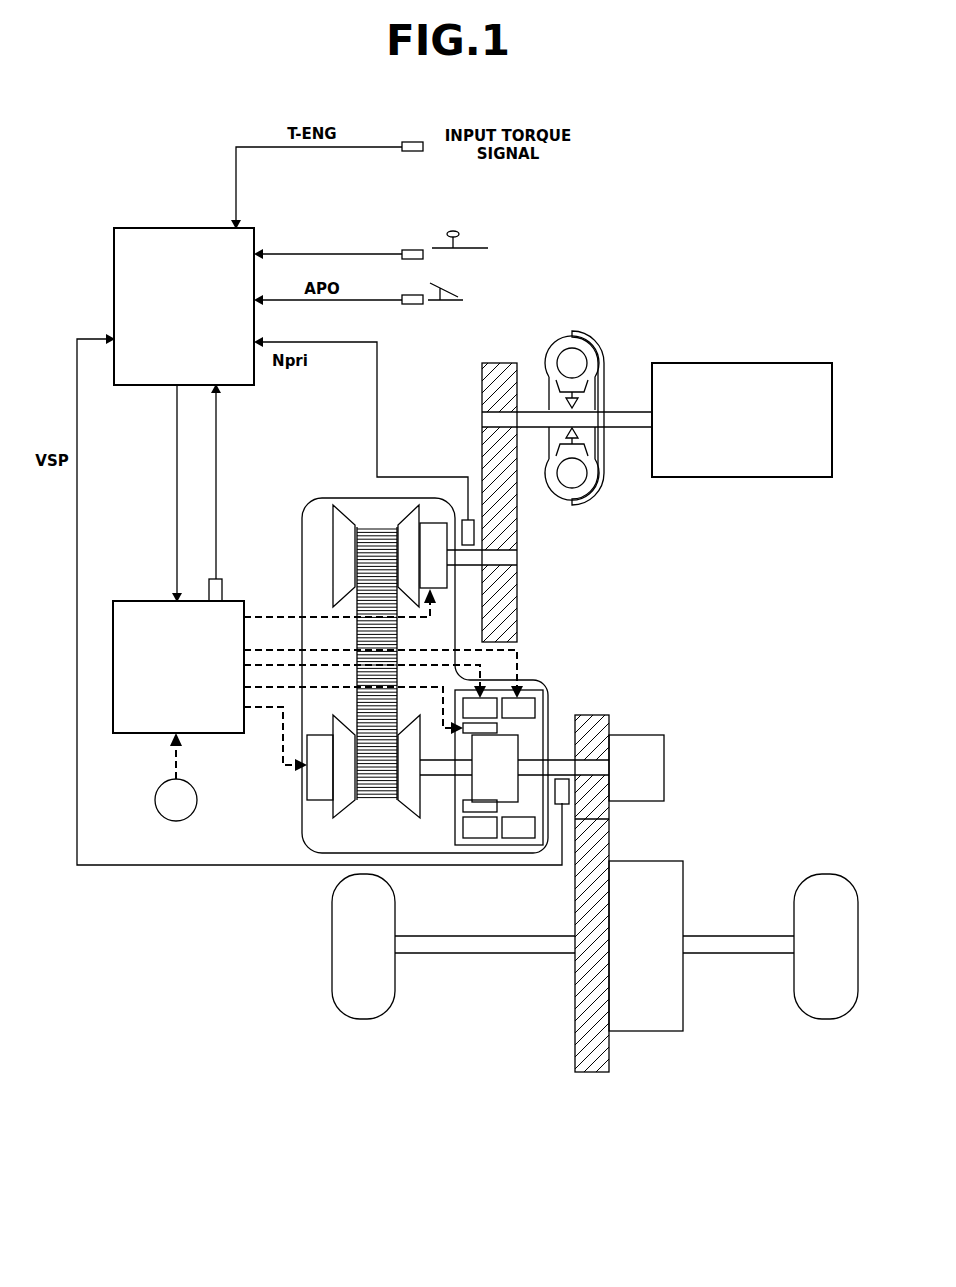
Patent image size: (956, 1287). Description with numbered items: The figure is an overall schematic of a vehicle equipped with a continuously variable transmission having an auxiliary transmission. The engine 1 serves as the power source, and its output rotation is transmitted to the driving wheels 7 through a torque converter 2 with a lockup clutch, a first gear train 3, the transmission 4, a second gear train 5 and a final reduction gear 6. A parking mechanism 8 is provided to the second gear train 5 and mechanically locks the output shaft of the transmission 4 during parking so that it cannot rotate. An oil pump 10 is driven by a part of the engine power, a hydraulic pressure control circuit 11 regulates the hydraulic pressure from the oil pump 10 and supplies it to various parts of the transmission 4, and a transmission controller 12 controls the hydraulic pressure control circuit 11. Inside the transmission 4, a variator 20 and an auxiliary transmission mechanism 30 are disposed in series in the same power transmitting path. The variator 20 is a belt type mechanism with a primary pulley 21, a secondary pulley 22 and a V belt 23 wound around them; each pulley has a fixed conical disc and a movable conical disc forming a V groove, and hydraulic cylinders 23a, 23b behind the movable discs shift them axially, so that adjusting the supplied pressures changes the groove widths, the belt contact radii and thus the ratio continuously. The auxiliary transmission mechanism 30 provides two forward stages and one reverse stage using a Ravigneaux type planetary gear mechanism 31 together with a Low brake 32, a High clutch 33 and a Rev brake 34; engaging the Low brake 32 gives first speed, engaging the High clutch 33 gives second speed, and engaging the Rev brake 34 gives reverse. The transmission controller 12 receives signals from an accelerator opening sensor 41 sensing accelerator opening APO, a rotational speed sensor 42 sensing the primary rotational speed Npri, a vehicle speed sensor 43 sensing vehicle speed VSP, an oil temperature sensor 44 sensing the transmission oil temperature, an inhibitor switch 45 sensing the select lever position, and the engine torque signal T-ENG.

The engine 1 is at (818, 378).
The torque converter 2 is at (604, 352).
The first gear train 3 is at (505, 354).
The transmission 4 is at (330, 490).
The second gear train 5 is at (590, 1084).
The final reduction gear 6 is at (657, 1017).
The driving wheels 7 is at (363, 1020).
The parking mechanism 8 is at (652, 750).
The oil pump 10 is at (155, 797).
The hydraulic pressure control circuit 11 is at (132, 610).
The transmission controller 12 is at (186, 242).
The variator 20 is at (322, 523).
The primary pulley 21 is at (348, 553).
The secondary pulley 22 is at (343, 790).
The V belt 23 is at (377, 530).
The hydraulic cylinder 23a is at (433, 533).
The hydraulic cylinder 23b is at (315, 770).
The auxiliary transmission mechanism 30 is at (536, 719).
The Ravigneaux type planetary gear mechanism 31 is at (500, 790).
The Low brake 32 is at (488, 705).
The High clutch 33 is at (470, 806).
The Rev brake 34 is at (526, 707).
The accelerator opening sensor 41 is at (413, 305).
The rotational speed sensor 42 is at (468, 528).
The vehicle speed sensor 43 is at (575, 790).
The oil temperature sensor 44 is at (222, 586).
The inhibitor switch 45 is at (413, 252).